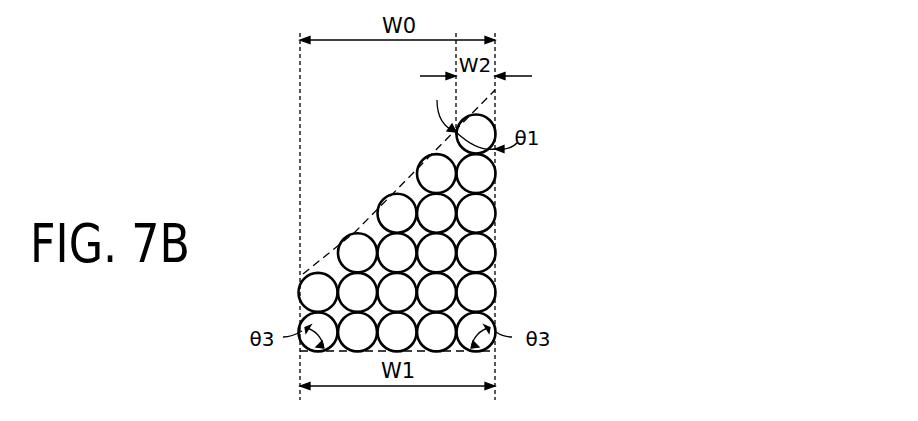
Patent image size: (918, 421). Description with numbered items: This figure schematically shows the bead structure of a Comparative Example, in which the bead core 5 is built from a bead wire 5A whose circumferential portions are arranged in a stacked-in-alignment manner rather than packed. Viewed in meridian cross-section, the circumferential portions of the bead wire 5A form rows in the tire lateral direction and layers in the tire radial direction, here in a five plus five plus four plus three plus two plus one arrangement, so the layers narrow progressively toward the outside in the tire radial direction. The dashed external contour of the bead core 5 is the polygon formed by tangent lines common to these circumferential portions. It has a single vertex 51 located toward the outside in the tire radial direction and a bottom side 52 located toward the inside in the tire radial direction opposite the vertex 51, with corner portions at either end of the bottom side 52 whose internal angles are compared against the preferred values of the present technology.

The bead core 5 is at (414, 153).
The bead wire 5A is at (478, 292).
The vertex 51 is at (495, 89).
The bottom side 52 is at (456, 351).